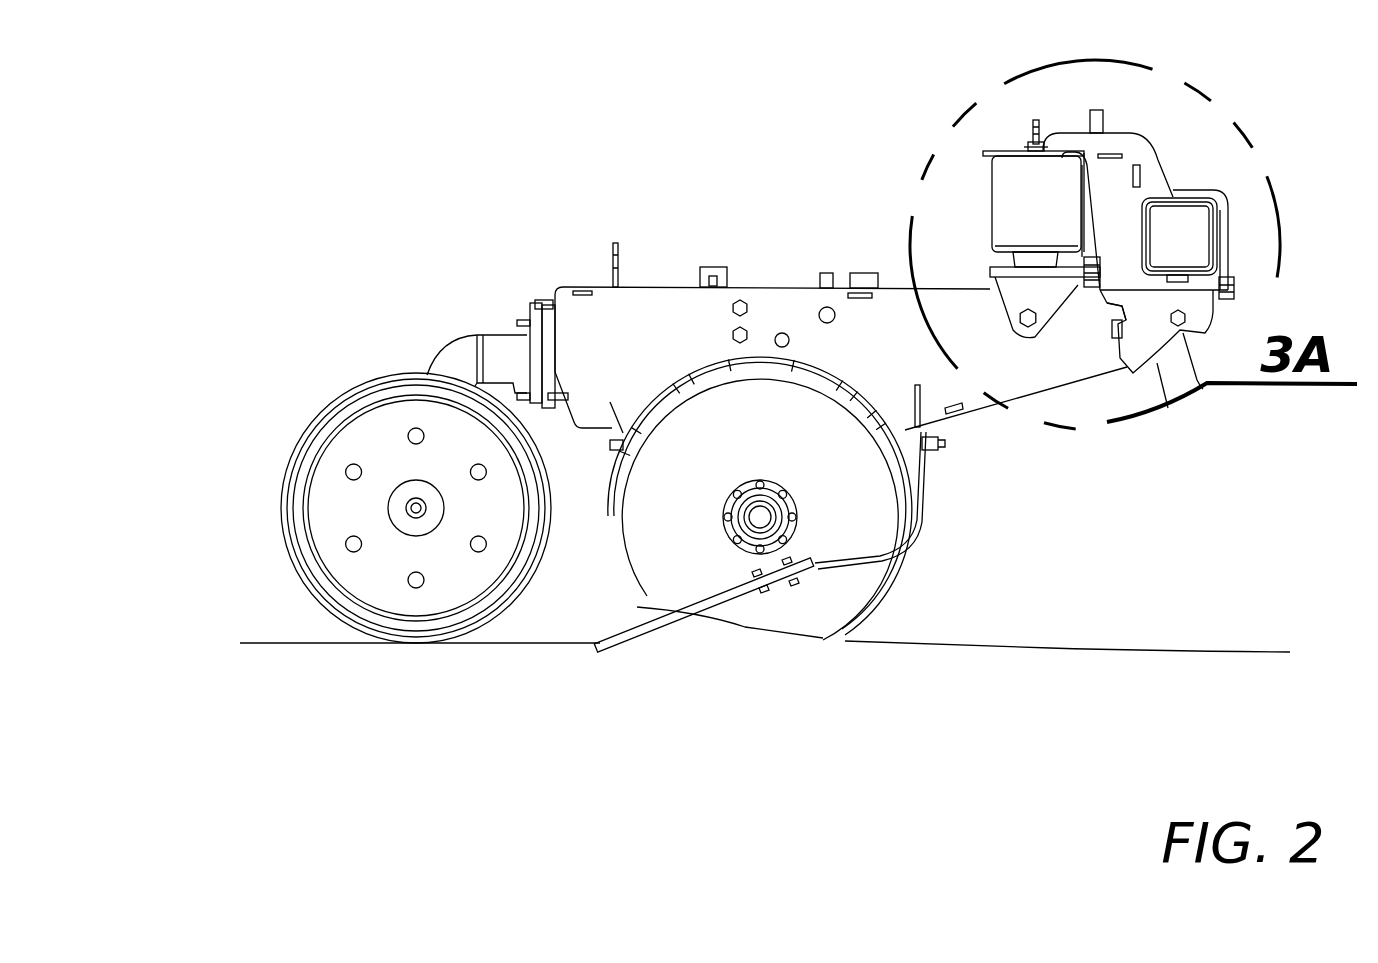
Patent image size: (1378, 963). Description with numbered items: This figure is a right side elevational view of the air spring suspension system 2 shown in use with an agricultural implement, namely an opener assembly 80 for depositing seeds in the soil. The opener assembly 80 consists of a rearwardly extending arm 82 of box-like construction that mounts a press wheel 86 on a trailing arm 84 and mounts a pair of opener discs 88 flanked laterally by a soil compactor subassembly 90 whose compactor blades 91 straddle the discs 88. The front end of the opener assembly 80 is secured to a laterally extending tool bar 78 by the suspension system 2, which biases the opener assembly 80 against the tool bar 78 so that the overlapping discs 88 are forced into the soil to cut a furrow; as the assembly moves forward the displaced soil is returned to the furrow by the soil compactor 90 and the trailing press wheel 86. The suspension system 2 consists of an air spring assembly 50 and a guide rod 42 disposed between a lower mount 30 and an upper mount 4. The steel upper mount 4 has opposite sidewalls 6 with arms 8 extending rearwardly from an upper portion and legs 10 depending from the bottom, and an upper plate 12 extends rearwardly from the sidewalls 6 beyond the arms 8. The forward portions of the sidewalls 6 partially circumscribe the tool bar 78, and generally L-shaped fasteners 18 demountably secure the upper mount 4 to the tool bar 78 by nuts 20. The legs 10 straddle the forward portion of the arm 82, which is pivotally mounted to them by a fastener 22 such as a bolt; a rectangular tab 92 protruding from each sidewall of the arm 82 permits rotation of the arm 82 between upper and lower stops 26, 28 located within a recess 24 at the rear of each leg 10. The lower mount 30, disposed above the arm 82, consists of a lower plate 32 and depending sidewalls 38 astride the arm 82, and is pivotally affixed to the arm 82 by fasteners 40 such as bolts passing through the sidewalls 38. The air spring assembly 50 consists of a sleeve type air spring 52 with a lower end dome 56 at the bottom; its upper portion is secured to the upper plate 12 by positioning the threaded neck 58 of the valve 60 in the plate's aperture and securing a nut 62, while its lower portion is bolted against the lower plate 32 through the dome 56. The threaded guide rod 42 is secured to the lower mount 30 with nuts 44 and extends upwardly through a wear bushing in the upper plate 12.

The suspension system 2 is at (1126, 93).
The upper mount 4 is at (1194, 128).
The sidewalls 6 is at (1106, 248).
The arms 8 is at (1142, 133).
The legs 10 is at (1160, 375).
The upper plate 12 is at (985, 153).
The L-shaped fasteners 18 is at (1225, 195).
The nuts 20 is at (1237, 288).
The fastener 22 is at (1198, 386).
The recess 24 is at (1124, 310).
The upper stop 26 is at (1118, 304).
The lower stop 28 is at (1127, 373).
The lower mount 30 is at (968, 310).
The lower plate 32 is at (990, 270).
The sidewalls 38 is at (1020, 333).
The fasteners 40 is at (1018, 319).
The guide rod 42 is at (1092, 112).
The nuts 44 is at (1103, 262).
The air spring assembly 50 is at (856, 125).
The air spring 52 is at (992, 205).
The lower end dome 56 is at (1014, 258).
The threaded neck 58 is at (1030, 140).
The valve 60 is at (1034, 122).
The nut 62 is at (1026, 147).
The tool bar 78 is at (1180, 206).
The opener assembly 80 is at (485, 238).
The arm 82 is at (980, 420).
The trailing arm 84 is at (458, 346).
The press wheel 86 is at (303, 438).
The opener discs 88 is at (900, 600).
The soil compactor subassembly 90 is at (926, 490).
The compactor blades 91 is at (700, 613).
The rectangular tab 92 is at (1113, 333).